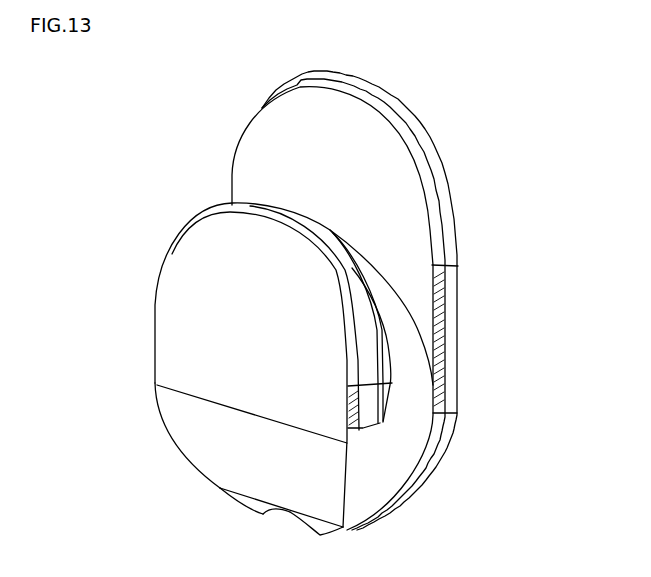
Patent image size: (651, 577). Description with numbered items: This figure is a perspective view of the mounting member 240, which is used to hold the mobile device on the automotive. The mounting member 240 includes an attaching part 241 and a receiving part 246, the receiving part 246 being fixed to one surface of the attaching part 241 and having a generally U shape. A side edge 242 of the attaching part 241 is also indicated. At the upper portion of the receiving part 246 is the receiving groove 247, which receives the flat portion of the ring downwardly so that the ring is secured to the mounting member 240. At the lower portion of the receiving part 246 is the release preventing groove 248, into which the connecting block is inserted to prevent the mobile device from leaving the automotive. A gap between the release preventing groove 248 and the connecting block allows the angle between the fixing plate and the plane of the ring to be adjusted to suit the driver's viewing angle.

The mounting member 240 is at (362, 295).
The attaching part 241 is at (279, 79).
The side edge 242 is at (455, 209).
The receiving part 246 is at (388, 470).
The receiving groove 247 is at (347, 231).
The release preventing groove 248 is at (287, 517).